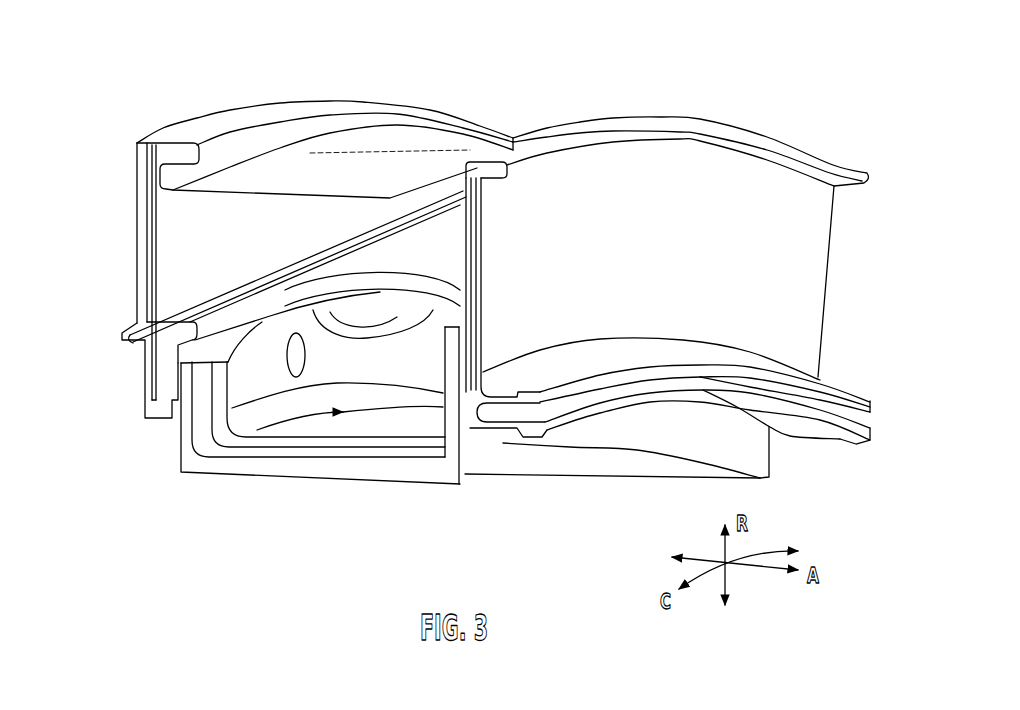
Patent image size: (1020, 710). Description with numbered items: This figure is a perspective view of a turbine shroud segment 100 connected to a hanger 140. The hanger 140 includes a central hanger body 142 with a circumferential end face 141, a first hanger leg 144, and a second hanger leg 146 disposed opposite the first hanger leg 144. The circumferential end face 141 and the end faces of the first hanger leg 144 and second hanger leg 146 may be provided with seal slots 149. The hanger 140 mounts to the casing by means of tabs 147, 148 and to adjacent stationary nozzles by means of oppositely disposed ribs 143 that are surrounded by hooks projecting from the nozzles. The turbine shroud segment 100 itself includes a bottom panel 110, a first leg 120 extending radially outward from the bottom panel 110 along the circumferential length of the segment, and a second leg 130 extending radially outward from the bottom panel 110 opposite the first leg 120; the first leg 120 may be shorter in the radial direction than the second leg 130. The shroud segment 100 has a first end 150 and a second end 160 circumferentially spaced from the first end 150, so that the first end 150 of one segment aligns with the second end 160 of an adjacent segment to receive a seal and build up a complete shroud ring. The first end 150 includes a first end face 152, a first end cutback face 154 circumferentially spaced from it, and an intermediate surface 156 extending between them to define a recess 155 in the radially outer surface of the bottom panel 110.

The turbine shroud segment 100 is at (164, 450).
The bottom panel 110 is at (233, 427).
The first leg 120 is at (250, 396).
The second leg 130 is at (502, 443).
The hanger 140 is at (475, 227).
The circumferential end face 141 is at (270, 217).
The central hanger body 142 is at (383, 163).
The ribs 143 is at (818, 377).
The first hanger leg 144 is at (136, 188).
The second hanger leg 146 is at (800, 242).
The tab 147 is at (228, 118).
The tab 148 is at (583, 120).
The seal slots 149 is at (153, 363).
The first end 150 is at (333, 445).
The first end face 152 is at (243, 470).
The first end cutback face 154 is at (418, 447).
The recess 155 is at (318, 460).
The intermediate surface 156 is at (388, 447).
The second end 160 is at (790, 488).